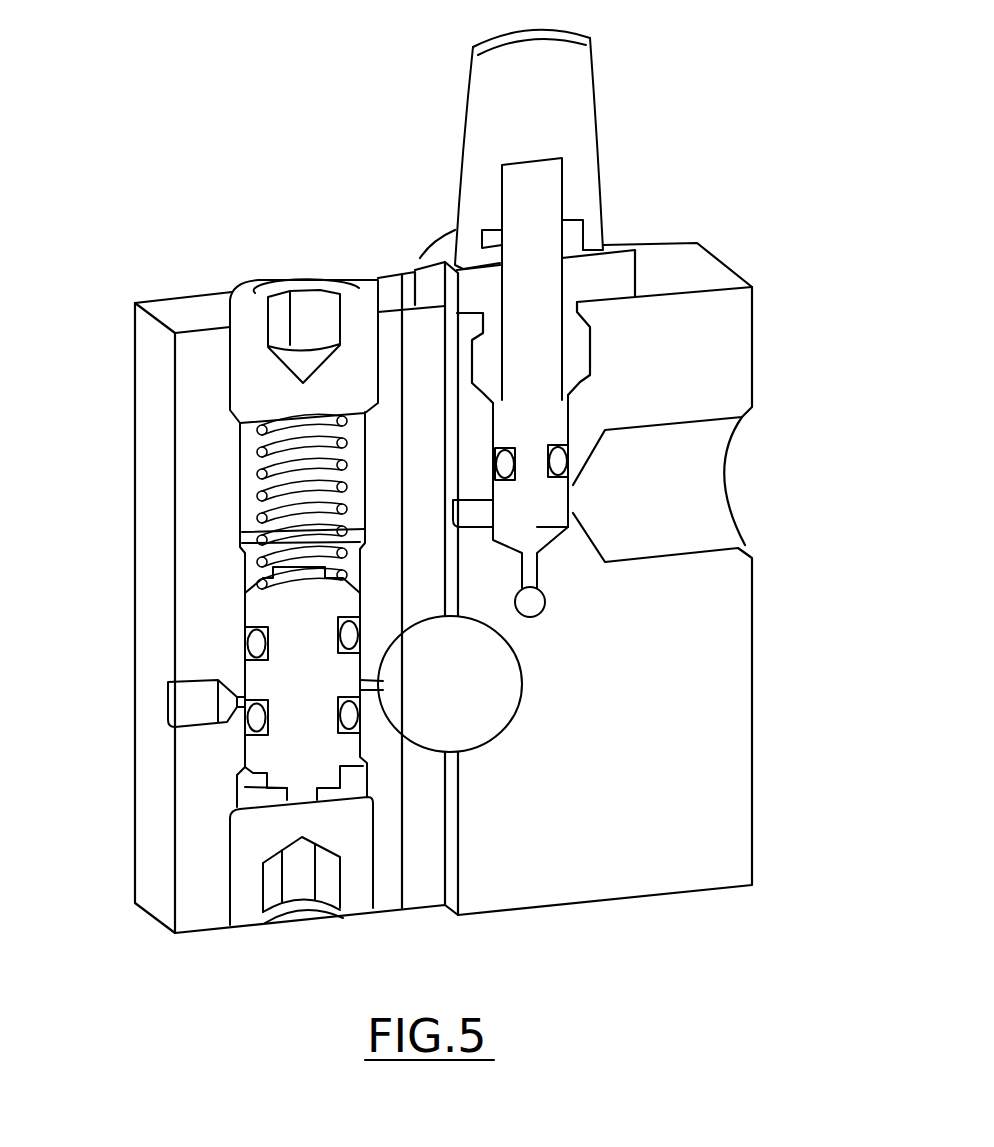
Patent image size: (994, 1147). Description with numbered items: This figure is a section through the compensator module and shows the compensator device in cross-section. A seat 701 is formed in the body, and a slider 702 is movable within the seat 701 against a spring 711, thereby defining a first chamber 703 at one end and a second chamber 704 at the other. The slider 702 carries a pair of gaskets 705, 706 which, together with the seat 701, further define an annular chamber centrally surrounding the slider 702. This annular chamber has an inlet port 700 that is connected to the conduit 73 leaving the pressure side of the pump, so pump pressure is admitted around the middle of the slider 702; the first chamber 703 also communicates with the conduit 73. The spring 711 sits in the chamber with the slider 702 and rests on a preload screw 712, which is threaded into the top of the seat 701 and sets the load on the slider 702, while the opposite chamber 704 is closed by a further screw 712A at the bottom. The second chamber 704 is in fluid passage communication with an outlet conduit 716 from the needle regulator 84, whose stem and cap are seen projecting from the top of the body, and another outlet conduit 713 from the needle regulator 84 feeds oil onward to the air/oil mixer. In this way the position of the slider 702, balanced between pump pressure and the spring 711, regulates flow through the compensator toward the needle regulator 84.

The inlet port 700 is at (366, 675).
The seat 701 is at (245, 503).
The slider 702 is at (303, 608).
The first chamber 703 is at (350, 777).
The second chamber 704 is at (253, 457).
The gasket 705 is at (260, 645).
The gasket 706 is at (260, 728).
The spring 711 is at (248, 472).
The preload screw 712 is at (243, 370).
The further screw 712A is at (245, 880).
The outlet conduit 713 is at (652, 500).
The outlet conduit 716 is at (472, 513).
The conduit 73 is at (378, 698).
The needle regulator 84 is at (578, 430).